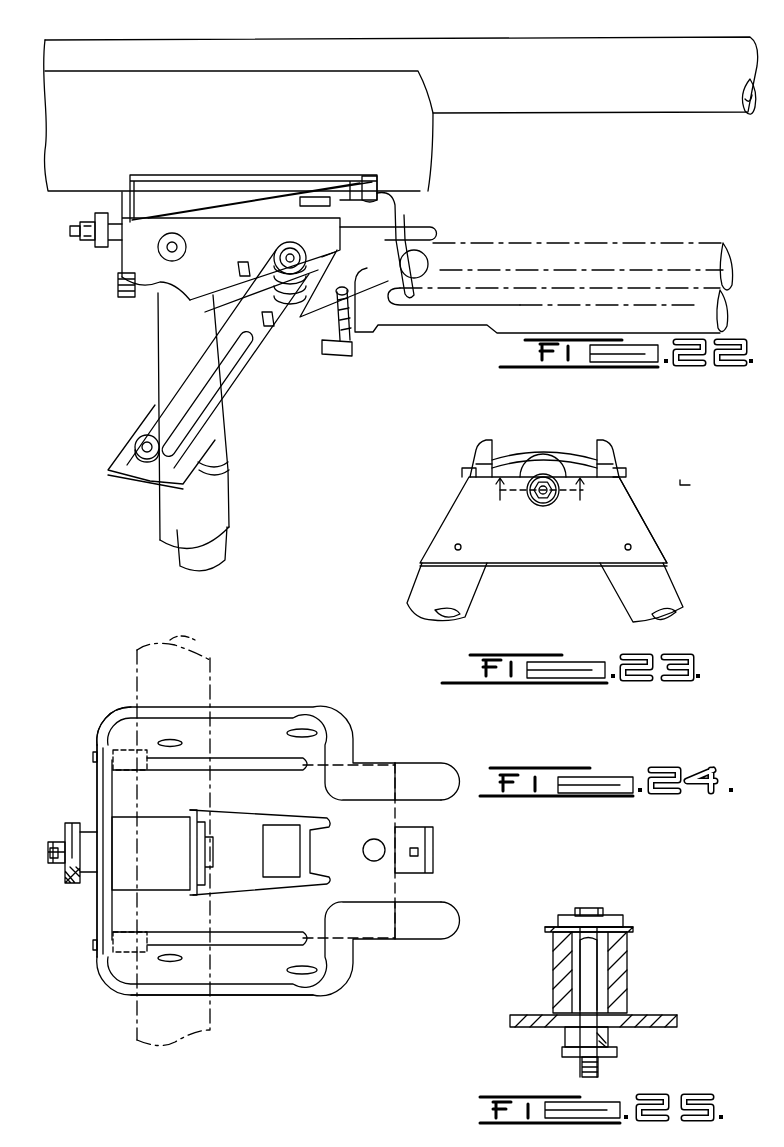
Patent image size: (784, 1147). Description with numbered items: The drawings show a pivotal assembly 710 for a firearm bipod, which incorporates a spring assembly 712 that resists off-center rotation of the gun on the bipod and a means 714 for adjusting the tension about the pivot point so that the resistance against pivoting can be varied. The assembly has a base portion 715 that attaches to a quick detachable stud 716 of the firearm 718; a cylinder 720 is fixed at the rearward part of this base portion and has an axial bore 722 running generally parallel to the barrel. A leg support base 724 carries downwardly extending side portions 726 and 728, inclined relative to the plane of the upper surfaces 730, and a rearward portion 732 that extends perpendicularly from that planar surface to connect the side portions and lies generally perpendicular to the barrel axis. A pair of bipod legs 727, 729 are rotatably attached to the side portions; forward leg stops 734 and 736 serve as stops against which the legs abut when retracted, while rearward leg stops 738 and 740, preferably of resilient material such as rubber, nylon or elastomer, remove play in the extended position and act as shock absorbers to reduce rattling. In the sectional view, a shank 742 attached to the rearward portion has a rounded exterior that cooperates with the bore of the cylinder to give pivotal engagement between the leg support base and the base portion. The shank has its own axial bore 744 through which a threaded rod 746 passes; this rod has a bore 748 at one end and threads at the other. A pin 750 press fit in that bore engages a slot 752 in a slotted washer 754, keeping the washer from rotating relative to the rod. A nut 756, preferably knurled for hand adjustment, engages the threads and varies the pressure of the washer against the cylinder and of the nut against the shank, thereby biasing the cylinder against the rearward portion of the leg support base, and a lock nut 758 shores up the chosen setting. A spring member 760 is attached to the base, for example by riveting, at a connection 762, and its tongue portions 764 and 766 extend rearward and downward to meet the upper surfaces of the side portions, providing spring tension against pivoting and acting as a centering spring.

In FIG. 22, the pivotal assembly 710 is at (98, 259).
In FIG. 23, the pivotal assembly 710 is at (679, 490).
In FIG. 24, the pivotal assembly 710 is at (62, 712).
In FIG. 22, the spring assembly 712 is at (242, 190).
In FIG. 25, the means for adjusting the tension 714 is at (688, 926).
In FIG. 22, the base portion 715 is at (199, 176).
In FIG. 23, the base portion 715 is at (481, 440).
In FIG. 22, the quick detachable stud 716 is at (296, 203).
In FIG. 22, the firearm 718 is at (243, 58).
In FIG. 24, the cylinder 720 is at (150, 826).
In FIG. 25, the cylinder 720 is at (628, 968).
In FIG. 25, the axial bore 722 is at (603, 990).
In FIG. 22, the leg support base 724 is at (200, 283).
In FIG. 23, the leg support base 724 is at (648, 540).
In FIG. 24, the leg support base 724 is at (290, 718).
In FIG. 22, the side portion 726 is at (195, 306).
In FIG. 23, the side portion 726 is at (666, 565).
In FIG. 24, the side portion 726 is at (236, 716).
In FIG. 24, the bipod leg 727 is at (245, 665).
In FIG. 23, the side portion 728 is at (452, 512).
In FIG. 24, the side portion 728 is at (270, 997).
In FIG. 24, the bipod leg 729 is at (135, 1028).
In FIG. 23, the upper surfaces 730 is at (492, 460).
In FIG. 22, the rearward portion 732 is at (120, 262).
In FIG. 23, the rearward portion 732 is at (537, 564).
In FIG. 24, the rearward portion 732 is at (97, 926).
In FIG. 25, the rearward portion 732 is at (515, 1028).
In FIG. 22, the forward leg stop 734 is at (437, 240).
In FIG. 24, the forward leg stop 734 is at (440, 780).
In FIG. 24, the forward leg stop 736 is at (435, 925).
In FIG. 24, the rearward leg stop 738 is at (113, 735).
In FIG. 24, the rearward leg stop 740 is at (113, 968).
In FIG. 25, the shank 742 is at (612, 1042).
In FIG. 25, the axial bore 744 is at (609, 1038).
In FIG. 22, the threaded rod 746 is at (72, 228).
In FIG. 24, the threaded rod 746 is at (64, 868).
In FIG. 25, the threaded rod 746 is at (586, 1004).
In FIG. 25, the bore 748 is at (580, 920).
In FIG. 25, the pin 750 is at (611, 914).
In FIG. 25, the slot 752 is at (626, 919).
In FIG. 25, the slotted washer 754 is at (634, 930).
In FIG. 22, the nut 756 is at (103, 214).
In FIG. 23, the nut 756 is at (543, 474).
In FIG. 24, the nut 756 is at (72, 823).
In FIG. 25, the nut 756 is at (588, 1070).
In FIG. 22, the lock nut 758 is at (90, 220).
In FIG. 23, the lock nut 758 is at (548, 504).
In FIG. 24, the lock nut 758 is at (66, 843).
In FIG. 25, the lock nut 758 is at (565, 1058).
In FIG. 22, the spring member 760 is at (372, 192).
In FIG. 24, the spring member 760 is at (395, 826).
In FIG. 22, the connection 762 is at (402, 216).
In FIG. 24, the connection 762 is at (373, 860).
In FIG. 23, the tongue portion 764 is at (619, 470).
In FIG. 24, the tongue portion 764 is at (120, 748).
In FIG. 23, the tongue portion 766 is at (466, 473).
In FIG. 24, the tongue portion 766 is at (112, 933).